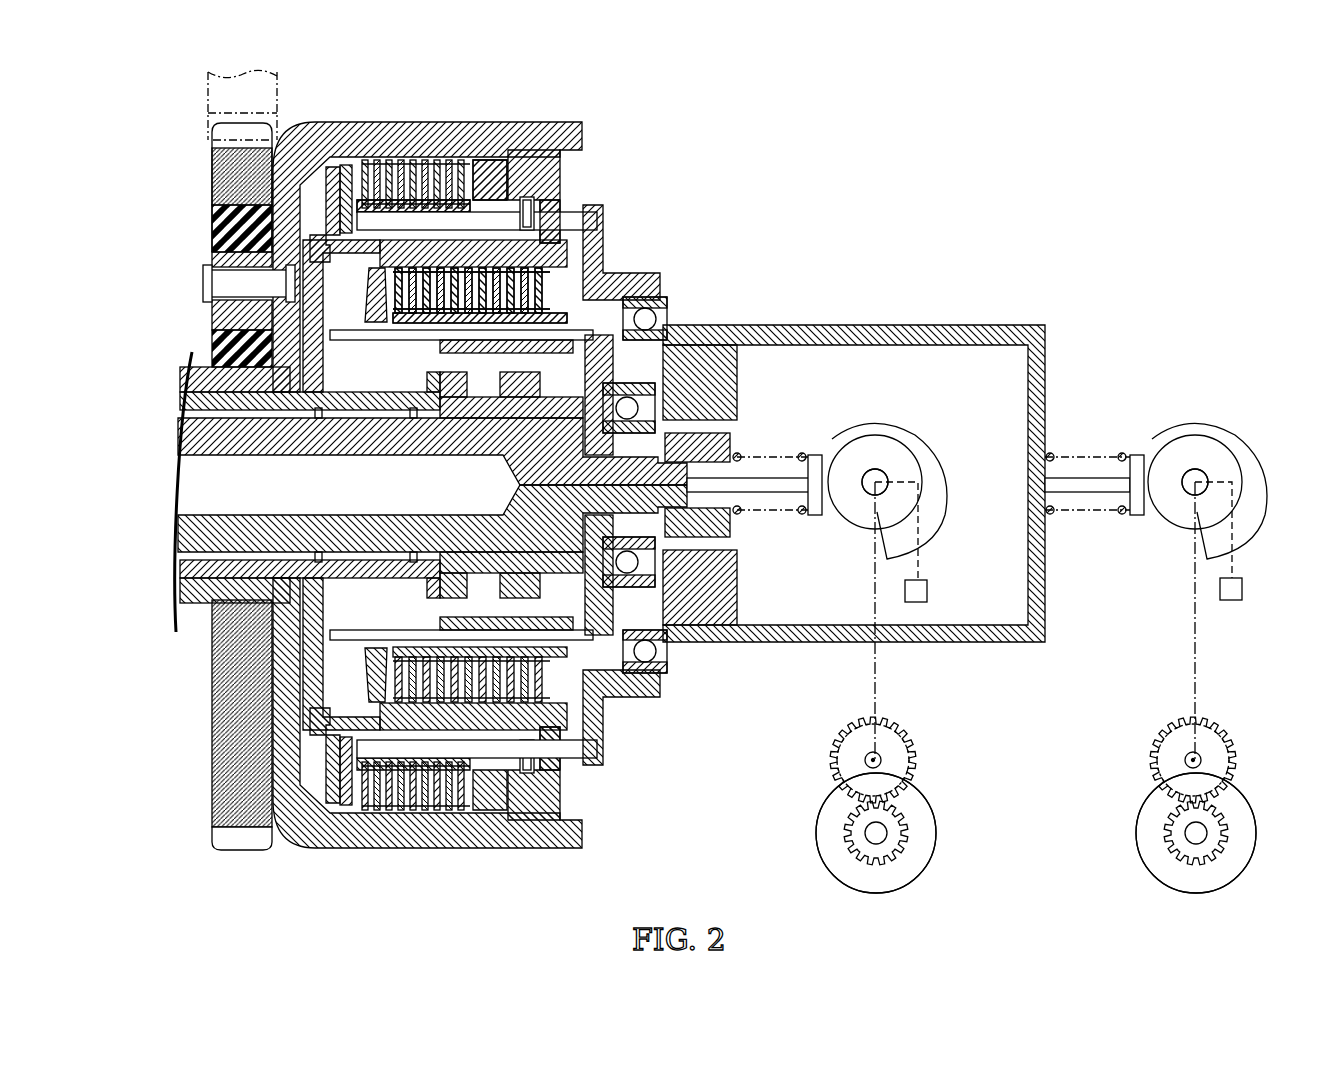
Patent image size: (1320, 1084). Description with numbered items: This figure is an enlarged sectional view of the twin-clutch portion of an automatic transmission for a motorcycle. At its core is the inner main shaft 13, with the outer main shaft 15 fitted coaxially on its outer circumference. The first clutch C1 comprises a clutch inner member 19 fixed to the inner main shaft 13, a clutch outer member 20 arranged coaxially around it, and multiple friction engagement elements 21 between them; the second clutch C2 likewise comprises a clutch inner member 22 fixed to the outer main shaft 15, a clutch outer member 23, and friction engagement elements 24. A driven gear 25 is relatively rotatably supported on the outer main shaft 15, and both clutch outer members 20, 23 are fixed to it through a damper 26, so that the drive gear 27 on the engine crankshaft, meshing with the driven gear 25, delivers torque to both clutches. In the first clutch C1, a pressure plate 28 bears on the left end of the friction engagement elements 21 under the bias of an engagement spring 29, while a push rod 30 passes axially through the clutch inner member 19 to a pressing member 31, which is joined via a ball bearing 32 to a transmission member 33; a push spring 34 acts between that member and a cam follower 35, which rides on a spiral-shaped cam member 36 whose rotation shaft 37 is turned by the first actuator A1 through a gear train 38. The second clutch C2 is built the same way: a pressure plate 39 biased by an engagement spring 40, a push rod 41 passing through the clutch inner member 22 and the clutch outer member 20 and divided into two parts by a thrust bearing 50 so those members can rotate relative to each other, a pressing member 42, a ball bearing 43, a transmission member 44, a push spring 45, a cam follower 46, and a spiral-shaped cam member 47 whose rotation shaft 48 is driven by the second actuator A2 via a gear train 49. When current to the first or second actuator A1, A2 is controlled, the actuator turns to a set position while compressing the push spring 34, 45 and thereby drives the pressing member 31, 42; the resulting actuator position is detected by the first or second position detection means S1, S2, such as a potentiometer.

The inner main shaft 13 is at (322, 440).
The outer main shaft 15 is at (220, 403).
The clutch inner member 19 is at (478, 413).
The clutch outer member 20 is at (552, 206).
The friction engagement elements 21 is at (530, 318).
The clutch inner member 22 is at (230, 343).
The clutch outer member 23 is at (388, 125).
The friction engagement elements 24 is at (460, 160).
The driven gear 25 is at (216, 175).
The damper 26 is at (232, 237).
The drive gear 27 is at (222, 97).
The pressure plate 28 is at (373, 277).
The engagement spring 29 is at (367, 300).
The push rod 30 is at (581, 395).
The pressing member 31 is at (695, 360).
The ball bearing 32 is at (640, 403).
The transmission member 33 is at (735, 455).
The push spring 34 is at (802, 455).
The cam follower 35 is at (815, 505).
The cam member 36 is at (935, 475).
The rotation shaft 37 is at (885, 478).
The gear train 38 is at (915, 780).
The pressure plate 39 is at (348, 167).
The engagement spring 40 is at (332, 207).
The push rod 41 is at (503, 217).
The pressing member 42 is at (645, 300).
The ball bearing 43 is at (650, 318).
The transmission member 44 is at (735, 336).
The push spring 45 is at (1120, 455).
The cam follower 46 is at (1137, 510).
The cam member 47 is at (1240, 460).
The rotation shaft 48 is at (1197, 478).
The gear train 49 is at (1150, 778).
The thrust bearing 50 is at (526, 205).
The first clutch C1 is at (597, 258).
The second clutch C2 is at (474, 136).
The first position detection means S1 is at (927, 592).
The second position detection means S2 is at (1232, 604).
The first actuator A1 is at (935, 862).
The second actuator A2 is at (1150, 882).